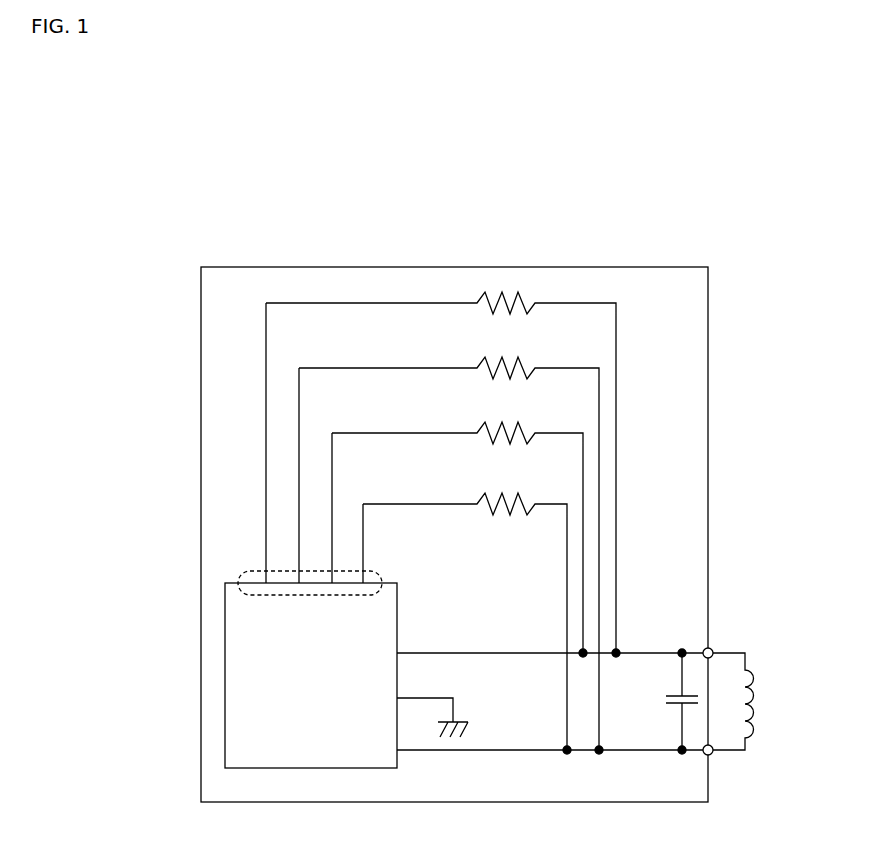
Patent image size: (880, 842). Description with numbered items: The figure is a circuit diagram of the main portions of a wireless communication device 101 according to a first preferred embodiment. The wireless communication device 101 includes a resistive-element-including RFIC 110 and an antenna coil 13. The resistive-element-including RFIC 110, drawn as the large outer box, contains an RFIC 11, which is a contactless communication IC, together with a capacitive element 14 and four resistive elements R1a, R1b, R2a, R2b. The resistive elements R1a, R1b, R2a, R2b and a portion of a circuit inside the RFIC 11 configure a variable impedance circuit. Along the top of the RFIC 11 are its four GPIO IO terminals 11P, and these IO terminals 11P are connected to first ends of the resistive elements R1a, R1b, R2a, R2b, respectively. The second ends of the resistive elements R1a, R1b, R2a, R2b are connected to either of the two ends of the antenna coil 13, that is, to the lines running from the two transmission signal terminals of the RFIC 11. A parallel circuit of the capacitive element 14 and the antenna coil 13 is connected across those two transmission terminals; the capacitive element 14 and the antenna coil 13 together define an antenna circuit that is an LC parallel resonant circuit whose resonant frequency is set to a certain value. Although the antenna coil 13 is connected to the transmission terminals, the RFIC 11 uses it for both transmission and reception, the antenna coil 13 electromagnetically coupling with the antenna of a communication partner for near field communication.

The wireless communication device 101 is at (672, 167).
The resistive-element-including RFIC 110 is at (708, 267).
The RFIC 11 is at (397, 597).
The IO terminals 11P is at (383, 571).
The antenna coil 13 is at (752, 690).
The capacitive element 14 is at (663, 699).
The resistive element R1a is at (443, 474).
The resistive element R1b is at (451, 555).
The resistive element R2a is at (459, 539).
The resistive element R2b is at (467, 623).